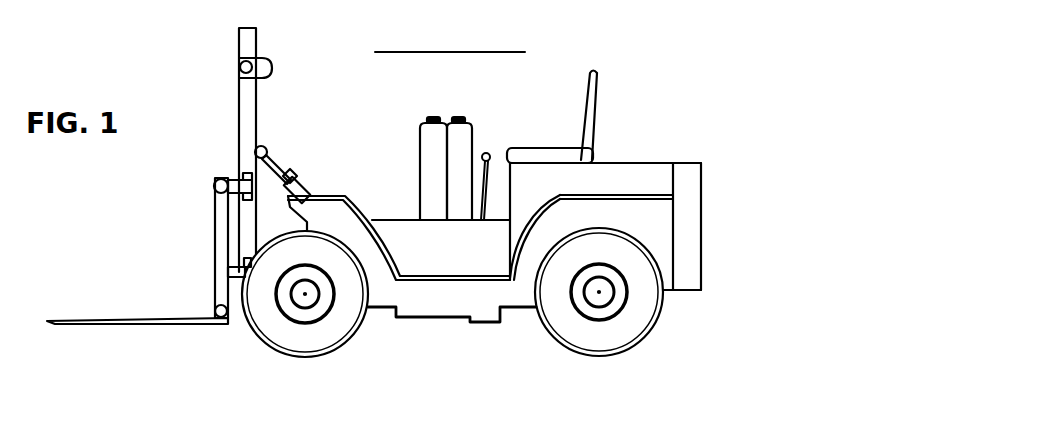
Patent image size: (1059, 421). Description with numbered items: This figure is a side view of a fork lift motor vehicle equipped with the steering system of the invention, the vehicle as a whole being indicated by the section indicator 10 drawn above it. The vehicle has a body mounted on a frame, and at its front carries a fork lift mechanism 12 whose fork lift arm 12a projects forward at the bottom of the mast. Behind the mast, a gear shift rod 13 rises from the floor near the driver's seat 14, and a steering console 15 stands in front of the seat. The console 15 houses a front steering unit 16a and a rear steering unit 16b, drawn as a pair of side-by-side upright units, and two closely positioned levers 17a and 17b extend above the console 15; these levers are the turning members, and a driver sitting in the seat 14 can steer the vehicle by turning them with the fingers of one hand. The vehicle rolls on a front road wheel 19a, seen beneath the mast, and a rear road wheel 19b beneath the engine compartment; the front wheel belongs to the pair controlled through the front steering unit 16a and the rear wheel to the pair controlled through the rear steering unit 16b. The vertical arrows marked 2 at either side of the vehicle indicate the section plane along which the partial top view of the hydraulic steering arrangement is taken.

The section line 2— 2 is at (33, 250).
The lift truck vehicle 10 is at (392, 66).
The fork lift mechanism 12 is at (178, 176).
The fork lift arm 12a is at (163, 318).
The gear shift rod 13 is at (490, 153).
The driver's seat 14 is at (582, 98).
The steering console 15 is at (444, 148).
The front steering unit 16a is at (415, 148).
The rear steering unit 16b is at (482, 148).
The lever 17a is at (433, 116).
The lever 17b is at (458, 116).
The front road wheel 19a is at (282, 354).
The rear road wheel 19b is at (621, 348).